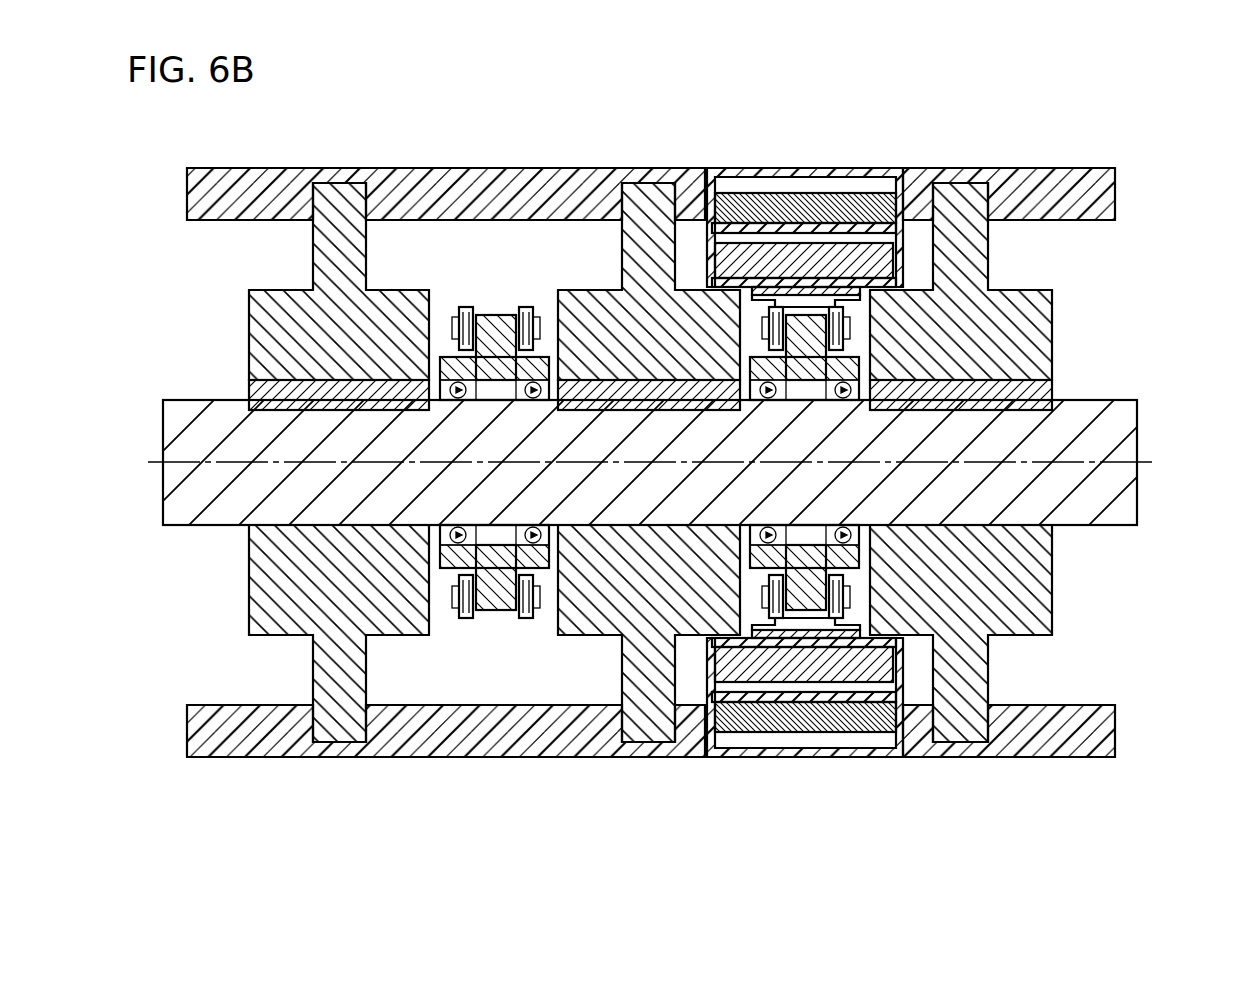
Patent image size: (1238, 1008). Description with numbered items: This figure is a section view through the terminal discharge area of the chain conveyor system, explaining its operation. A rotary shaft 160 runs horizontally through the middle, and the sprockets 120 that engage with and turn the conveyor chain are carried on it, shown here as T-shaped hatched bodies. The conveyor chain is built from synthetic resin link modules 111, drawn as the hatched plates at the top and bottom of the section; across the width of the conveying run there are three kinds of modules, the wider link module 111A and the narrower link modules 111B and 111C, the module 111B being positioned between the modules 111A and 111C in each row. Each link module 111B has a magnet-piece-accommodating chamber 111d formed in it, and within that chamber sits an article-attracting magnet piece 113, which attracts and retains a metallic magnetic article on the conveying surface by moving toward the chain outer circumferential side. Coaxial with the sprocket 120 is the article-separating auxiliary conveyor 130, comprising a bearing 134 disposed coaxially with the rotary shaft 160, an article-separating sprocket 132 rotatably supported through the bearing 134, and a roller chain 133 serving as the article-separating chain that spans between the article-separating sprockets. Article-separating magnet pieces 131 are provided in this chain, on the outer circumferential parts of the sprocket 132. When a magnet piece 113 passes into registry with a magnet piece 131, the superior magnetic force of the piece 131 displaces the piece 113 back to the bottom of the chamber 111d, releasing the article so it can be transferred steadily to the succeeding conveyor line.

The synthetic resin link module 111 is at (651, 450).
The synthetic resin link module 111A is at (577, 168).
The synthetic resin link module 111B is at (762, 168).
The synthetic resin link module 111C is at (1002, 168).
The magnet-piece-accommodating chamber 111d is at (810, 451).
The article-attracting magnet piece 113 is at (884, 193).
The sprocket 120 is at (257, 312).
The auxiliary conveyor 130 is at (659, 475).
The article-separating magnet piece 131 is at (893, 258).
The article-separating sprocket 132 is at (452, 556).
The roller chain 133 is at (462, 608).
The bearing 134 is at (440, 542).
The rotary shaft 160 is at (1128, 408).